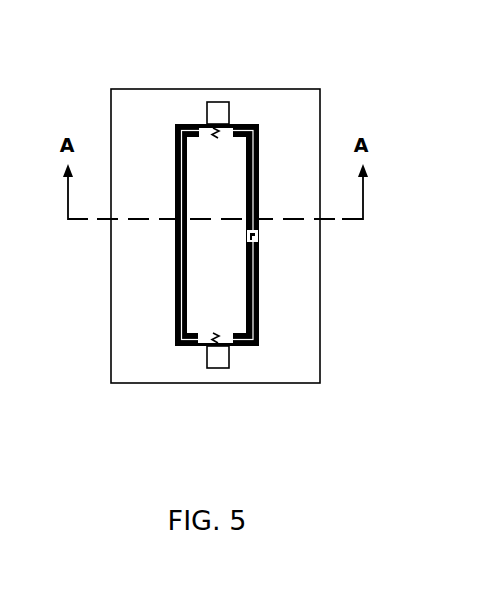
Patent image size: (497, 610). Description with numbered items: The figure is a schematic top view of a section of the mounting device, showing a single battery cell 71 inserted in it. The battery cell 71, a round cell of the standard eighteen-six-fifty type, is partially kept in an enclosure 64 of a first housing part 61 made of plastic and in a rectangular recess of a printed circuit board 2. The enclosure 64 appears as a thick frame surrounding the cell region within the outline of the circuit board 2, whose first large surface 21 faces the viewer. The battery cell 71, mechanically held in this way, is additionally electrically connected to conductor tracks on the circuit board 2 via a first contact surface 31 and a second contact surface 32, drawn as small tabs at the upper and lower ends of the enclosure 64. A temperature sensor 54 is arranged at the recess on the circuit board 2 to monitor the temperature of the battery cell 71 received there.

The circuit board 2 is at (216, 198).
The first large surface 21 is at (132, 120).
The first contact surface 31 is at (223, 113).
The second contact surface 32 is at (218, 355).
The temperature sensor 54 is at (258, 235).
The first housing part 61 is at (203, 128).
The enclosure 64 is at (215, 239).
The battery cell 71 is at (208, 267).